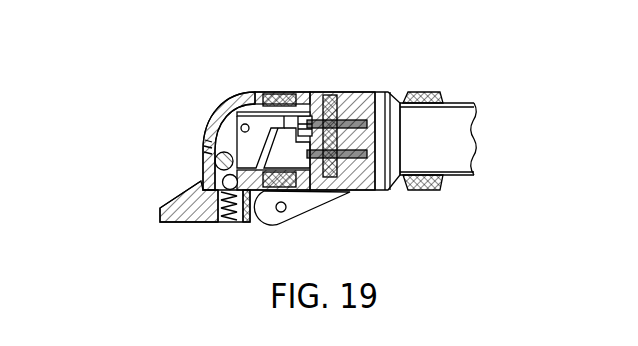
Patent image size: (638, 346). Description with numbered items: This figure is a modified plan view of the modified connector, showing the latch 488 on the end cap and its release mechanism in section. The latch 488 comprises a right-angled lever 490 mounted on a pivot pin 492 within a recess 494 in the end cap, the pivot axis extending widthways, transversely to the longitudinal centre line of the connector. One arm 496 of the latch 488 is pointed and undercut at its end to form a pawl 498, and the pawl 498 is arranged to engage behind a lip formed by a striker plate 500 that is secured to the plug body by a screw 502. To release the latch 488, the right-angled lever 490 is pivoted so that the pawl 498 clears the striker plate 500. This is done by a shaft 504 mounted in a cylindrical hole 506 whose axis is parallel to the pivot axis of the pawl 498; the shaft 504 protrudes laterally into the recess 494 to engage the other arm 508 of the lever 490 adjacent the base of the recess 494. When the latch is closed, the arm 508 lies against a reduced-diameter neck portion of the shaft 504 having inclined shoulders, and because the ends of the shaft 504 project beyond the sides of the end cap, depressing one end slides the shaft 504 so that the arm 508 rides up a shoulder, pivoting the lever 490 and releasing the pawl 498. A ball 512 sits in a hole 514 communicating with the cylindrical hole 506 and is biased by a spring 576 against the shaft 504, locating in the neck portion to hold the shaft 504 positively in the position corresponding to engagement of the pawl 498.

The latch 488 is at (260, 93).
The right-angled lever 490 is at (242, 125).
The pivot pin 492 is at (246, 96).
The recess 494 is at (238, 150).
The arm 496 is at (275, 97).
The pawl 498 is at (307, 96).
The striker plate 500 is at (320, 204).
The screw 502 is at (256, 195).
The shaft 504 is at (208, 147).
The cylindrical hole 506 is at (209, 153).
The arm 508 is at (210, 141).
The ball 512 is at (215, 172).
The hole 514 is at (222, 181).
The spring 576 is at (232, 216).